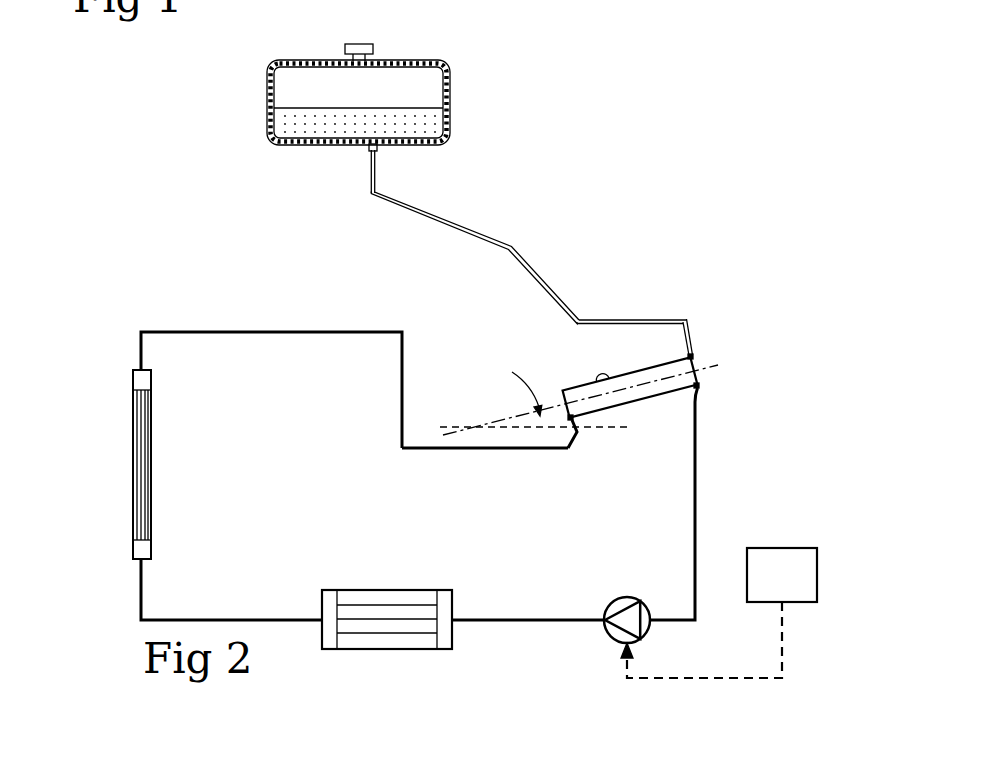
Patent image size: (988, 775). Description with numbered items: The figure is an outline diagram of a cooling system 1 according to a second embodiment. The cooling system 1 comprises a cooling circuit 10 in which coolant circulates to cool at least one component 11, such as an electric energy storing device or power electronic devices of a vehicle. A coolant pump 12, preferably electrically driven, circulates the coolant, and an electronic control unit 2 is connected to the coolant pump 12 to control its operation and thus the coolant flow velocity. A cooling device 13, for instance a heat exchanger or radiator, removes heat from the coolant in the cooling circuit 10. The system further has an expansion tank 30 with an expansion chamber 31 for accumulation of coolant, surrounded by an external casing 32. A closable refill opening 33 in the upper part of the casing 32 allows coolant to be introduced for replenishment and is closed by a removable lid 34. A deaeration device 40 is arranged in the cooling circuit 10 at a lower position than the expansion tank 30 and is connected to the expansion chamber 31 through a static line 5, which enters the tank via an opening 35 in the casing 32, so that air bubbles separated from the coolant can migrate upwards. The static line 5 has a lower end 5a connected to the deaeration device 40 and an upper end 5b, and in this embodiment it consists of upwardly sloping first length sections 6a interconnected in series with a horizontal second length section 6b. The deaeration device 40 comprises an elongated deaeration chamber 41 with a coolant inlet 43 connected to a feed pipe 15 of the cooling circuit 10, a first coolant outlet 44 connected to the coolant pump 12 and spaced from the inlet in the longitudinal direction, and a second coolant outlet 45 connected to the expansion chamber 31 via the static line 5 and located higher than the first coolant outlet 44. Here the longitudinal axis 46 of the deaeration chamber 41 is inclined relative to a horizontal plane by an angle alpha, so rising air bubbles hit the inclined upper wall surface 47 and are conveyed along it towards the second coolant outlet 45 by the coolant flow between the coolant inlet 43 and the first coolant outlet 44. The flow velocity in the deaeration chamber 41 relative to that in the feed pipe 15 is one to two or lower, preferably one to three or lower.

The cooling system 1 is at (694, 230).
The electronic control unit 2 is at (785, 555).
The static line 5 is at (434, 242).
The lower end 5a is at (693, 345).
The upper end 5b is at (378, 152).
The first length sections 6a is at (368, 172).
The horizontal second length section 6b is at (625, 320).
The cooling circuit 10 is at (241, 300).
The component 11 is at (368, 597).
The coolant pump 12 is at (635, 605).
The cooling device 13 is at (147, 437).
The feed pipe 15 is at (510, 448).
The expansion tank 30 is at (237, 94).
The expansion chamber 31 is at (423, 95).
The external casing 32 is at (450, 107).
The closable refill opening 33 is at (357, 67).
The removable lid 34 is at (357, 49).
The opening 35 is at (365, 147).
The deaeration device 40 is at (728, 376).
The deaeration chamber 41 is at (650, 390).
The coolant inlet 43 is at (578, 423).
The first coolant outlet 44 is at (699, 392).
The second coolant outlet 45 is at (697, 362).
The longitudinal axis 46 is at (582, 395).
The inclined upper wall surface 47 is at (598, 378).